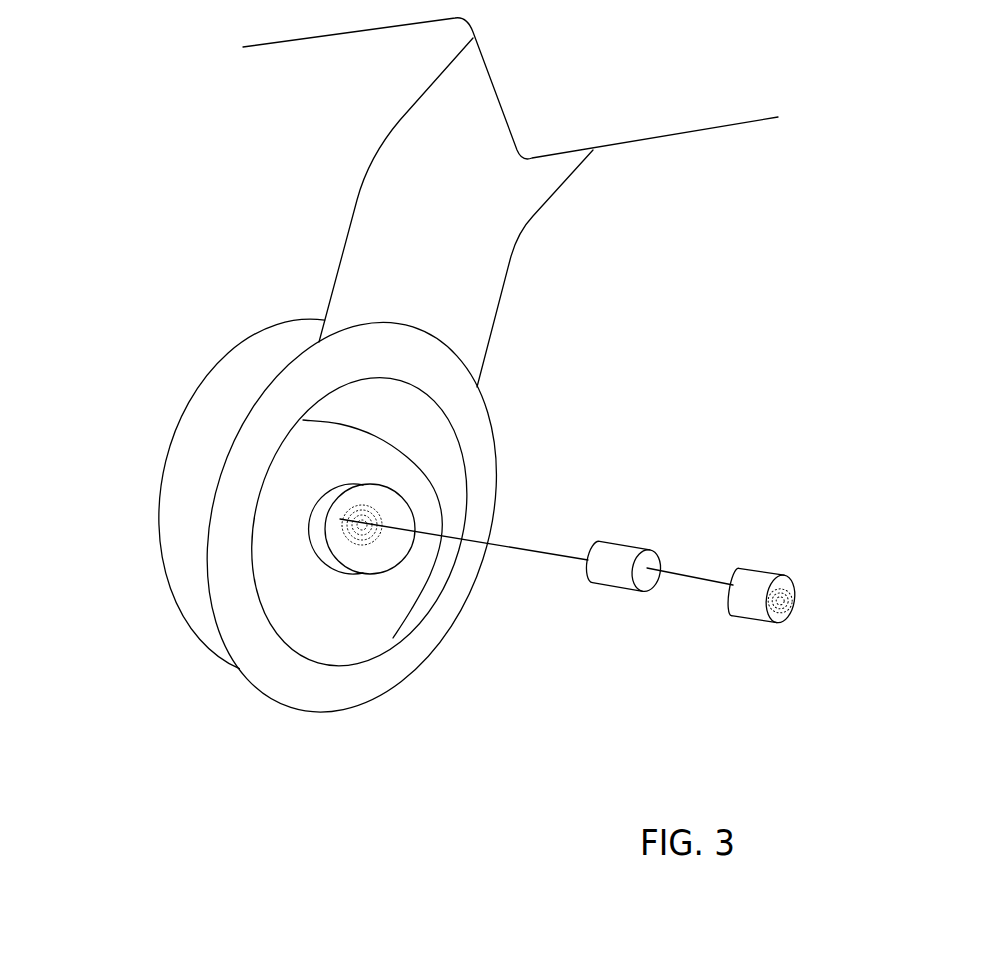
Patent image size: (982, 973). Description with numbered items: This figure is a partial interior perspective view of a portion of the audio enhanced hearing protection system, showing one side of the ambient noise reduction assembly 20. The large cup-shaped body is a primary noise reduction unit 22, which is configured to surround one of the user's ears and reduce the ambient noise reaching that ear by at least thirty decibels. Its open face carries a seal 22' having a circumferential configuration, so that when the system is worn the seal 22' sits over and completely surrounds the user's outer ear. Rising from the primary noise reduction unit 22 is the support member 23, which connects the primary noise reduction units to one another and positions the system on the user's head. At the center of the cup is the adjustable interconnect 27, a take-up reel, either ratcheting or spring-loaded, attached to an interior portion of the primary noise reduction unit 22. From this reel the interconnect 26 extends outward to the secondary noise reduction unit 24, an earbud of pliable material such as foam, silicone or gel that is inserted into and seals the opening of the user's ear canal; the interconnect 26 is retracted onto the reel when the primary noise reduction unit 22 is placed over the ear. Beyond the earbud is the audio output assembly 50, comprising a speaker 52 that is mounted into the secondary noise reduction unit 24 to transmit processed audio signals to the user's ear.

The ambient noise reduction assembly 20 is at (137, 628).
The primary noise reduction unit 22 is at (306, 509).
The seal 22' is at (434, 521).
The support member 23 is at (507, 277).
The secondary noise reduction unit 24 is at (625, 542).
The interconnect 26 is at (512, 547).
The adjustable interconnect 27 is at (405, 495).
The audio output assembly 50 is at (732, 628).
The speaker 52 is at (772, 572).